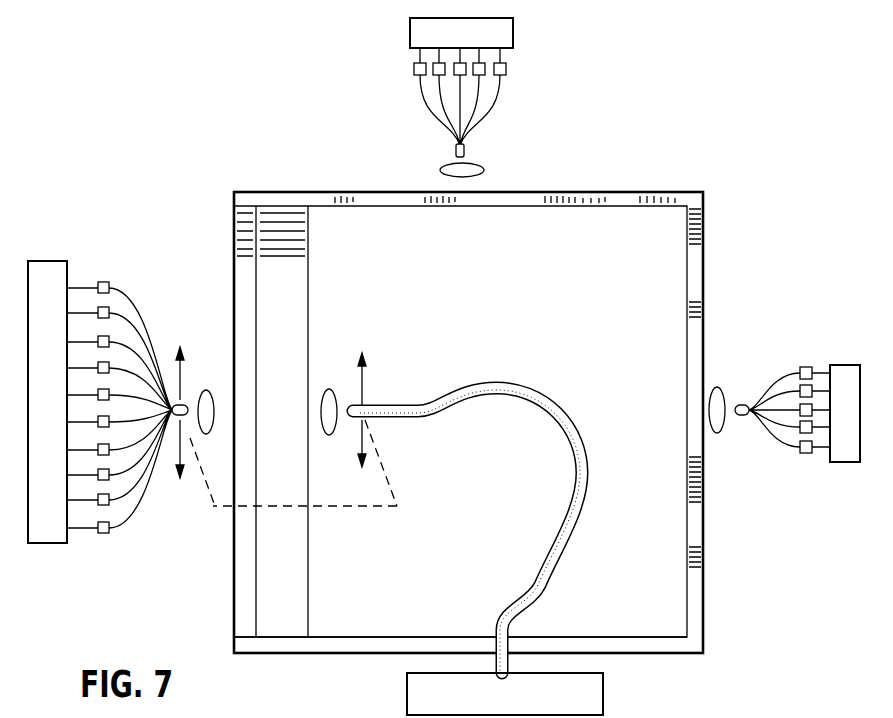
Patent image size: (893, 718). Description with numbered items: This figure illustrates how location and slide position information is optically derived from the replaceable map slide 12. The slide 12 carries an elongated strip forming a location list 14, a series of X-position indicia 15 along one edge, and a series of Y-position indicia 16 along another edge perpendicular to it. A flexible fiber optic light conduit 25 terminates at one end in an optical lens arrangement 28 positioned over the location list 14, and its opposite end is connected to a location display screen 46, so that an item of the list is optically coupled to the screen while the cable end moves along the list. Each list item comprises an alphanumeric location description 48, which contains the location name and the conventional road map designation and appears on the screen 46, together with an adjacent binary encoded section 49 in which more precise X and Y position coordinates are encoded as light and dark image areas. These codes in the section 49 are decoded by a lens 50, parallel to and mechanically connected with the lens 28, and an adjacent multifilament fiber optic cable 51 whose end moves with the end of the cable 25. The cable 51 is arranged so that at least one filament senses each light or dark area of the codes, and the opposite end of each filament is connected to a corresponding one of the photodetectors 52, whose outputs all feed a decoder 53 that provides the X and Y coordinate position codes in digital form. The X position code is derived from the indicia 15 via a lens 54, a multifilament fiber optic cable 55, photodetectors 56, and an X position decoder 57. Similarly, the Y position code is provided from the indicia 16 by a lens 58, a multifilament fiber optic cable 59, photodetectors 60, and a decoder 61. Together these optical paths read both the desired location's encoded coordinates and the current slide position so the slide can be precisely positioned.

The map slide 12 is at (660, 177).
The location list 14 is at (265, 648).
The X-position indicia 15 is at (555, 192).
The Y-position indicia 16 is at (703, 500).
The fiber optic light conduit 25 is at (560, 548).
The optical lens arrangement 28 is at (328, 389).
The location display screen 46 is at (604, 695).
The alphanumeric location description 48 is at (300, 256).
The binary encoded section 49 is at (250, 250).
The lens 50 is at (212, 432).
The multifilament fiber optic cable 51 is at (178, 418).
The photodetectors 52 is at (109, 288).
The decoder 53 is at (58, 260).
The lens 54 is at (480, 168).
The multifilament fiber optic cable 55 is at (466, 150).
The photodetectors 56 is at (460, 75).
The X position decoder 57 is at (513, 32).
The lens 58 is at (717, 387).
The multifilament fiber optic cable 59 is at (742, 417).
The photodetectors 60 is at (800, 410).
The decoder 61 is at (845, 365).